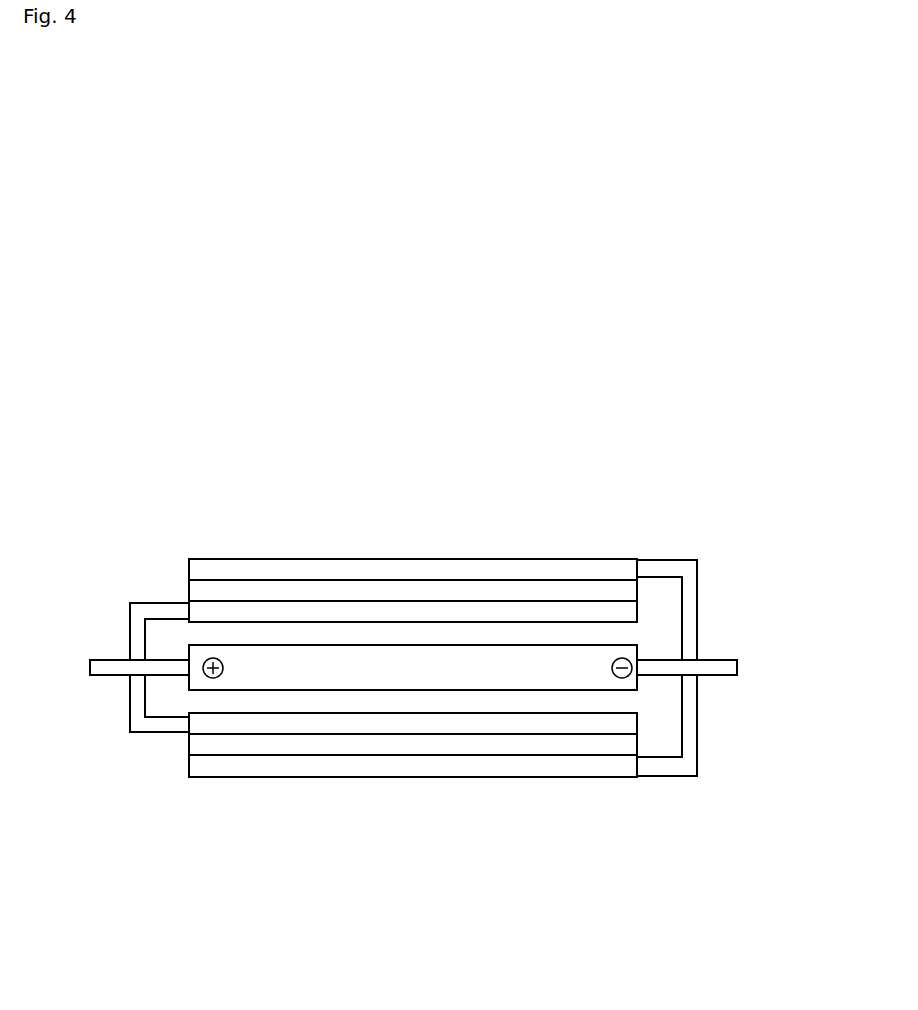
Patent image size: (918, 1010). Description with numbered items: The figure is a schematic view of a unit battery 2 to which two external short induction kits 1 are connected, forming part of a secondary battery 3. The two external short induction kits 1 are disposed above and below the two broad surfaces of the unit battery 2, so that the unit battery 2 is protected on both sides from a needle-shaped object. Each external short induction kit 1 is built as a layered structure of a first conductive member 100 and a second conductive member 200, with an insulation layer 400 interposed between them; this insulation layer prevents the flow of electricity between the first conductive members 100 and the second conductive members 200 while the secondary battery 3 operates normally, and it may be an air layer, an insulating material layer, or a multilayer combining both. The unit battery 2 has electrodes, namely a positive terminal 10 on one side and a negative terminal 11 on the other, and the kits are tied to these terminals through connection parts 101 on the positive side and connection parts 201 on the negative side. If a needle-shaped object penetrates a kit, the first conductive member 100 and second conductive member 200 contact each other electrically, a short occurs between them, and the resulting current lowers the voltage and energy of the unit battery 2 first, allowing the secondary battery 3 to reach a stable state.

The external short induction kit 1 is at (795, 559).
The unit battery 2 is at (464, 673).
The secondary battery 3 is at (195, 514).
The positive terminal 10 is at (88, 667).
The negative terminal 11 is at (738, 667).
The first conductive member 100 is at (584, 610).
The positive electrode connection part 101 is at (138, 625).
The second conductive member 200 is at (475, 570).
The negative electrode connection part 201 is at (690, 606).
The insulating layer 400 is at (527, 593).